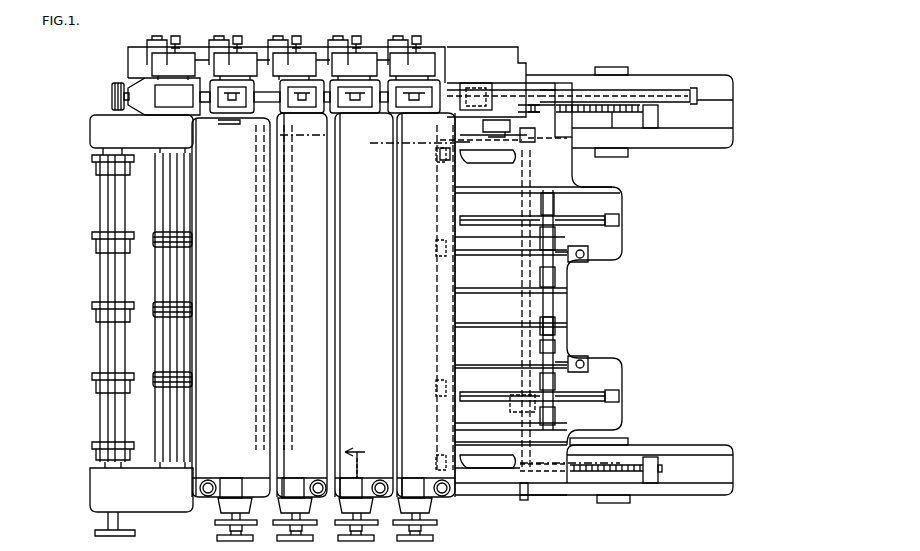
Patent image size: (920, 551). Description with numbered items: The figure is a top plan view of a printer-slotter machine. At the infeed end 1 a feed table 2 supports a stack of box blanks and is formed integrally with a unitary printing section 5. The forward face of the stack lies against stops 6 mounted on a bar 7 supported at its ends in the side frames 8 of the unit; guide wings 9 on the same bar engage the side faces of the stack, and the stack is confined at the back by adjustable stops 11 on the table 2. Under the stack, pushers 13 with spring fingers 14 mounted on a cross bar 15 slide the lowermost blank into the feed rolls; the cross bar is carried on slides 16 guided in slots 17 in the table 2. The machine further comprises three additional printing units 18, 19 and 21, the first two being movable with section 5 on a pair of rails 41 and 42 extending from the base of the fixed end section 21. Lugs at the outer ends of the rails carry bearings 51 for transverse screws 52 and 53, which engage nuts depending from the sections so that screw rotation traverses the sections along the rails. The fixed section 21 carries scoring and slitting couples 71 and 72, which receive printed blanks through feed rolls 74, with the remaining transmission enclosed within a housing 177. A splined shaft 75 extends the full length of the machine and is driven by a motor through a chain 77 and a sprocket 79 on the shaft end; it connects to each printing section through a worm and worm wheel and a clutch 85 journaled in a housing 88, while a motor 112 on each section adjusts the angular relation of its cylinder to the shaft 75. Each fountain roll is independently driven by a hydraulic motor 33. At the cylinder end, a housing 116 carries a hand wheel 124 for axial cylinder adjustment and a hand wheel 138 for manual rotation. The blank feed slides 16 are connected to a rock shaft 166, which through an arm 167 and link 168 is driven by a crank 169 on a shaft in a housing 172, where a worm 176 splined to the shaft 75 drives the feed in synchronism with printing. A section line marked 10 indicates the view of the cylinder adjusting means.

The infeed end 1 is at (622, 210).
The feed table 2 is at (618, 376).
The unitary printing section 5 is at (424, 305).
The stops 6 is at (437, 243).
The bar 7 is at (430, 206).
The side frames 8 is at (457, 142).
The guide wings 9 is at (500, 160).
The section arrow 10 is at (363, 461).
The stops 11 is at (584, 260).
The pushers 13 is at (557, 336).
The spring fingers 14 is at (540, 238).
The cross bar 15 is at (562, 222).
The slides 16 is at (588, 226).
The slots 17 is at (612, 220).
The printing unit 18 is at (375, 305).
The printing unit 19 is at (312, 305).
The fixed end section 21 is at (228, 305).
The hydraulic motor 33 is at (210, 480).
The rail 41 is at (685, 450).
The rail 42 is at (733, 108).
The bearings 51 is at (660, 116).
The screw 52 is at (595, 472).
The screw 53 is at (612, 120).
The scoring couple 71 is at (180, 363).
The slitting couple 72 is at (104, 355).
The feed rolls 74 is at (140, 283).
The splined shaft 75 is at (585, 90).
The chain 77 is at (120, 82).
The sprocket 79 is at (110, 98).
The clutch 85 is at (183, 58).
The housing 88 is at (178, 108).
The motor 112 is at (155, 40).
The housing 116 is at (244, 490).
The hand wheel 124 is at (215, 523).
The hand wheel 138 is at (217, 539).
The rock shaft 166 is at (535, 183).
The arm 167 is at (560, 138).
The link 168 is at (522, 135).
The crank 169 is at (495, 120).
The housing 172 is at (477, 55).
The worm 176 is at (470, 85).
The housing 177 is at (100, 486).